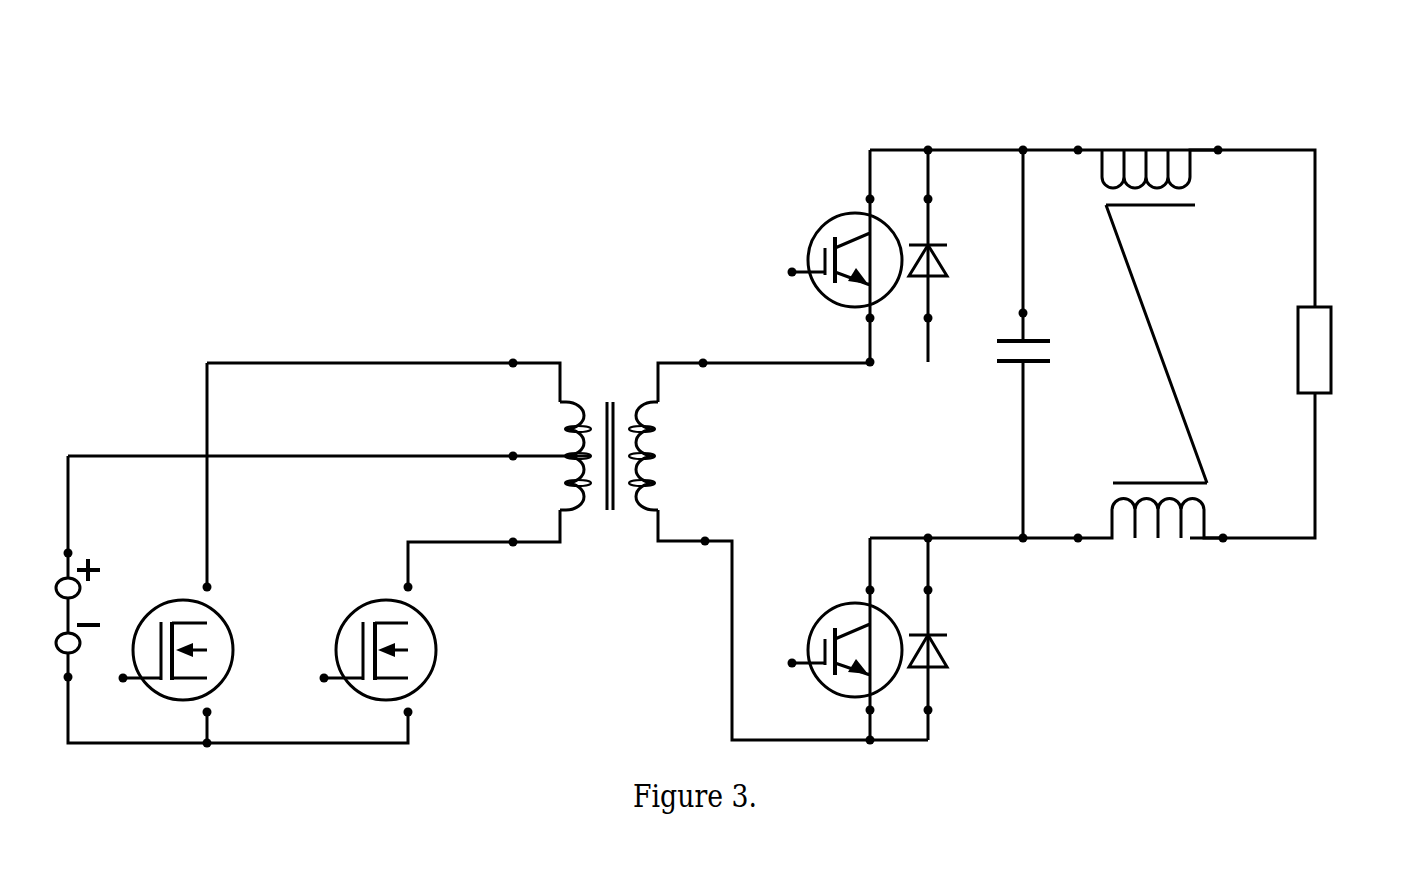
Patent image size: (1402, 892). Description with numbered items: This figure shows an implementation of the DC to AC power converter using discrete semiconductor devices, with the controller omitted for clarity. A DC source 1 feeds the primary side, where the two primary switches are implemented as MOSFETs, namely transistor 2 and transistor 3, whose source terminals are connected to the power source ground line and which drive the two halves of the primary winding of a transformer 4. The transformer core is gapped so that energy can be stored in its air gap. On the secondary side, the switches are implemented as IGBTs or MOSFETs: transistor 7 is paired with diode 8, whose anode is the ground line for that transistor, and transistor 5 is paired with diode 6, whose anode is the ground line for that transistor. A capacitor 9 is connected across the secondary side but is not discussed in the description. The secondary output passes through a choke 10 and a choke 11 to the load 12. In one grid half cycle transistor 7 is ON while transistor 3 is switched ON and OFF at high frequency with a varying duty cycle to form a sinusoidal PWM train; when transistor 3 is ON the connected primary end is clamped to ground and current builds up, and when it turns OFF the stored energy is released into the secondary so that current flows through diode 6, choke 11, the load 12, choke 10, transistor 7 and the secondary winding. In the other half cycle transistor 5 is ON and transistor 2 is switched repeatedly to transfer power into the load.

The DC power supply terminals 1 is at (57, 643).
The transistor 2 is at (140, 624).
The transistor 3 is at (333, 648).
The transformer 4 is at (632, 402).
The transistor 5 is at (808, 648).
The diode 6 is at (950, 666).
The transistor 7 is at (810, 240).
The diode 8 is at (948, 245).
The capacitor 9 is at (997, 361).
The choke 10 is at (1140, 155).
The choke 11 is at (1178, 540).
The load 12 is at (1318, 395).